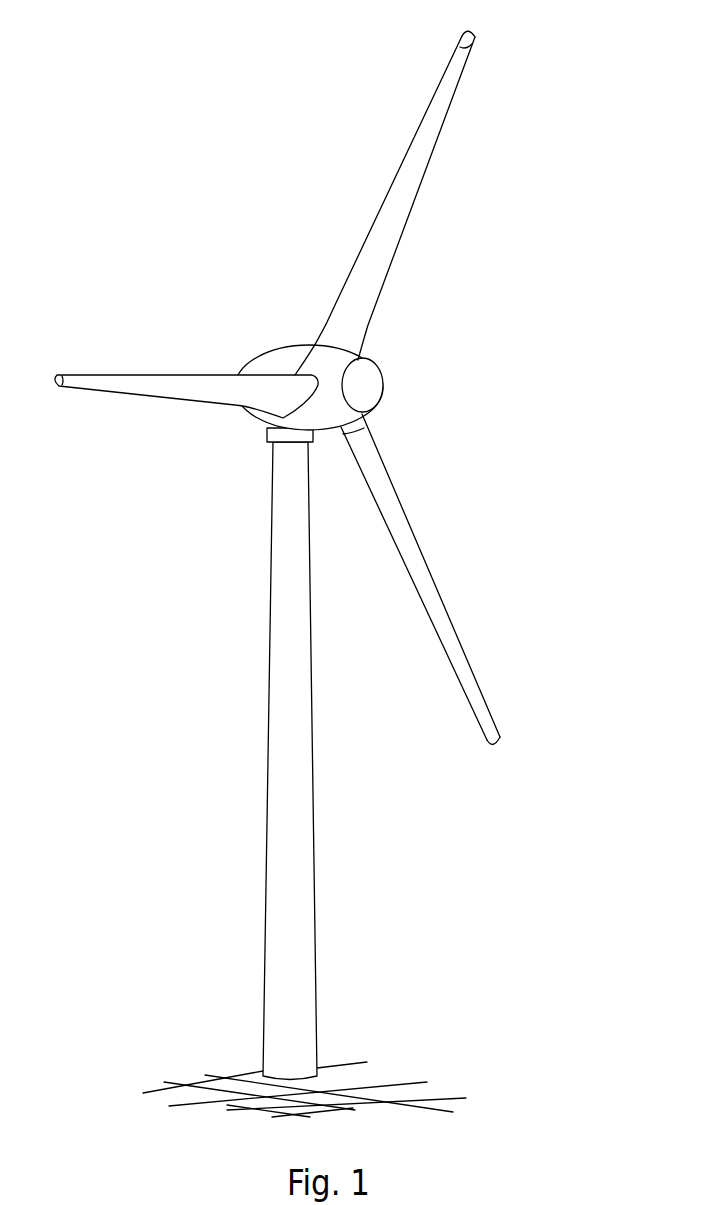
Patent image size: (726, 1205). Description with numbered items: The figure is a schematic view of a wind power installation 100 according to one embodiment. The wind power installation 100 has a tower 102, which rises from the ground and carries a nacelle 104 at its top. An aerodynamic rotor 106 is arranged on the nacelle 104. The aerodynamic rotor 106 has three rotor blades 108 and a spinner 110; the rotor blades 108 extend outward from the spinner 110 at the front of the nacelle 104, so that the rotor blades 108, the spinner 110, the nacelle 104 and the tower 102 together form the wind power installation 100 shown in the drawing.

The wind power installation 100 is at (224, 513).
The tower 102 is at (297, 857).
The nacelle 104 is at (283, 362).
The aerodynamic rotor 106 is at (453, 306).
The rotor blades 108 is at (118, 377).
The spinner 110 is at (367, 387).